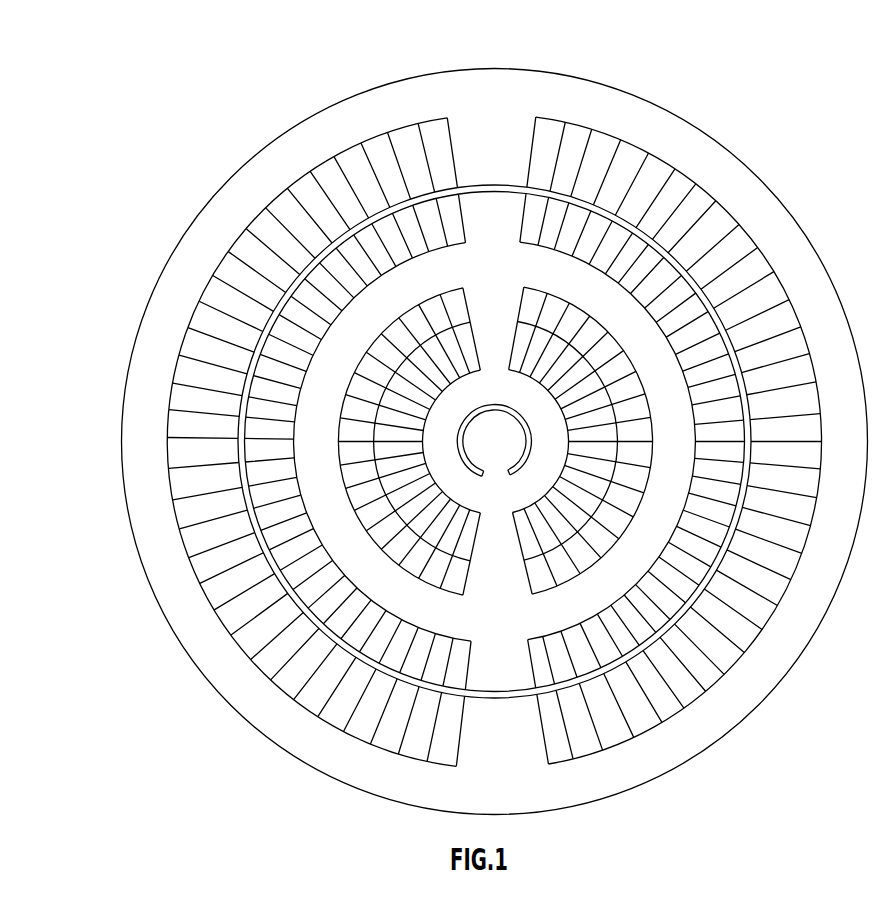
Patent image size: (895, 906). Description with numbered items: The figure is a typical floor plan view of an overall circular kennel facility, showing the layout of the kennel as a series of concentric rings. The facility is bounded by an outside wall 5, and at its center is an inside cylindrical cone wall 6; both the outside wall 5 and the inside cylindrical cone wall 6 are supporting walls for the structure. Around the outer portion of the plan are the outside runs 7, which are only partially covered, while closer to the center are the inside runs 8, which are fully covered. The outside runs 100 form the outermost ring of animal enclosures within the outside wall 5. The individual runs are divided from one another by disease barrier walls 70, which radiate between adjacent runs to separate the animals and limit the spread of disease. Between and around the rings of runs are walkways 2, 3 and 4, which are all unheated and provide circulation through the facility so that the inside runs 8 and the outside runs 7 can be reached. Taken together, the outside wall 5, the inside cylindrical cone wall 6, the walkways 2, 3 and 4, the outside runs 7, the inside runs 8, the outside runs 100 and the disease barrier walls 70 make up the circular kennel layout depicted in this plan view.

The outside runs 100 is at (235, 612).
The walkway 2 is at (495, 454).
The walkway 3 is at (494, 450).
The walkway 4 is at (531, 454).
The outside wall 5 is at (497, 184).
The inside cylindrical cone wall 6 is at (524, 450).
The outside runs 7 is at (633, 277).
The inside runs 8 is at (552, 391).
The disease barrier walls 70 is at (817, 525).